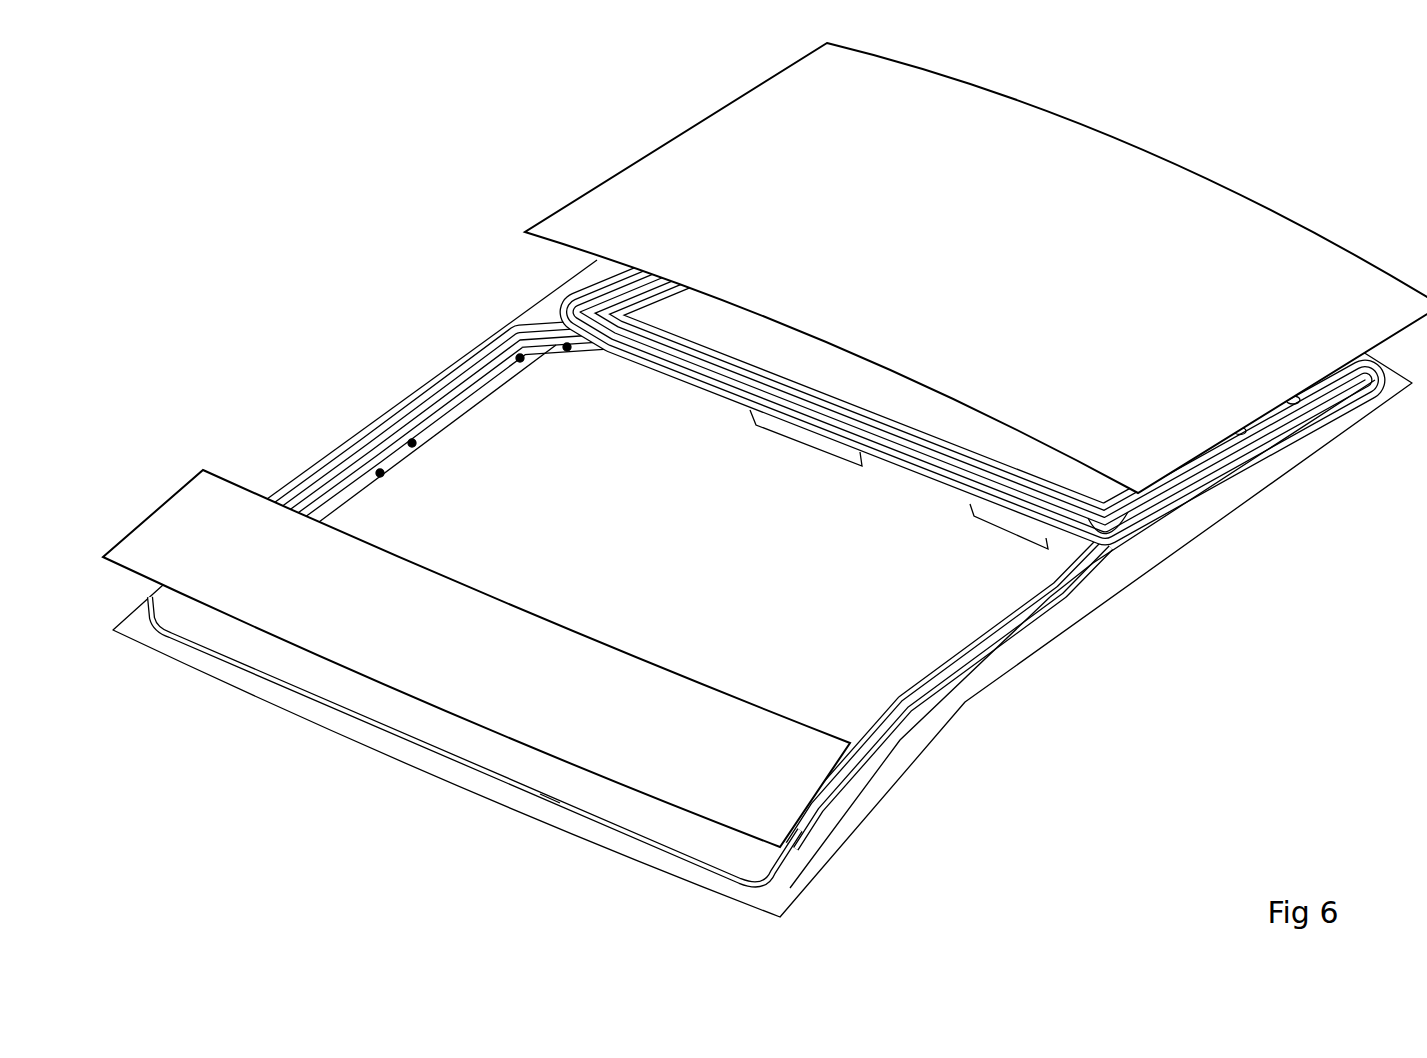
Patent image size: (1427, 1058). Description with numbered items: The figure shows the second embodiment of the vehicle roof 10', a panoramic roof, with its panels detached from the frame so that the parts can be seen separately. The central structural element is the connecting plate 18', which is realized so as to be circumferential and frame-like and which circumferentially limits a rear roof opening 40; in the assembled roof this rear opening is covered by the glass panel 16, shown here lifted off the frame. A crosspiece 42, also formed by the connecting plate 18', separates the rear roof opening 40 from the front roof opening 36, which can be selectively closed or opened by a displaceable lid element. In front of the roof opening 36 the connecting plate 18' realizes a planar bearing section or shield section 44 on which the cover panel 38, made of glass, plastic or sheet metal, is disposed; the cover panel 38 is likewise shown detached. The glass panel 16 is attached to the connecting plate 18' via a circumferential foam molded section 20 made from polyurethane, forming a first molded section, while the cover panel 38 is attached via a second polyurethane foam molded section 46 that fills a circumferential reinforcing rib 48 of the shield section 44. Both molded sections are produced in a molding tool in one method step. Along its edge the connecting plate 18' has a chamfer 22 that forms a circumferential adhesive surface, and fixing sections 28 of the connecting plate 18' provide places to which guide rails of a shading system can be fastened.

The roof 10' is at (272, 126).
The glass panel 16 is at (1078, 200).
The connecting plate 18' is at (762, 588).
The foam molded section 20 is at (1222, 458).
The chamfer 22 is at (1310, 443).
The fixing sections 28 is at (573, 290).
The roof opening 36 is at (913, 697).
The cover panel 38 is at (412, 657).
The rear roof opening 40 is at (1113, 510).
The crosspiece 42 is at (903, 463).
The shield section 44 is at (783, 892).
The foam molded section 46 is at (743, 887).
The reinforcing rib 48 is at (550, 808).